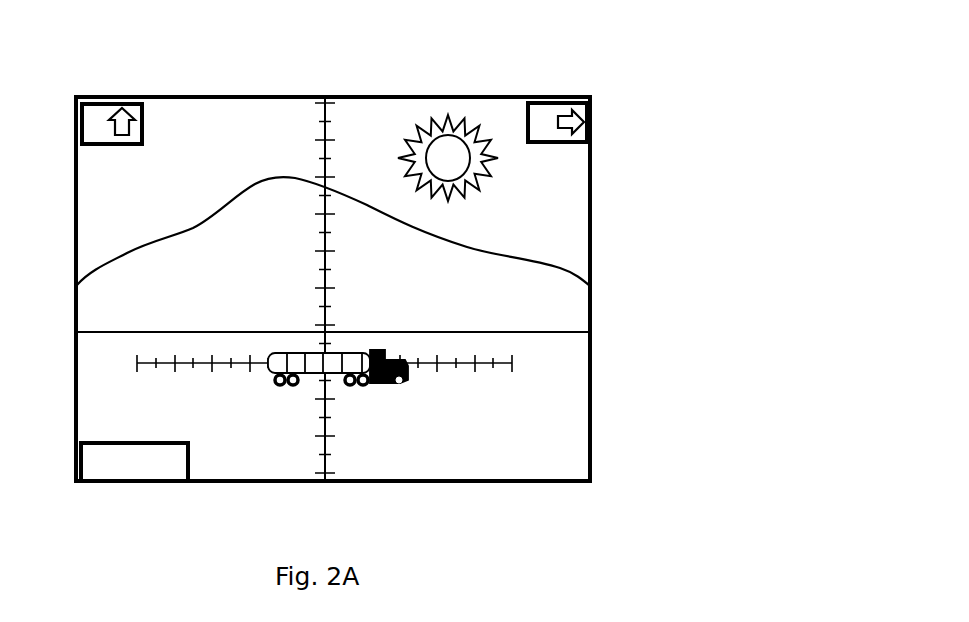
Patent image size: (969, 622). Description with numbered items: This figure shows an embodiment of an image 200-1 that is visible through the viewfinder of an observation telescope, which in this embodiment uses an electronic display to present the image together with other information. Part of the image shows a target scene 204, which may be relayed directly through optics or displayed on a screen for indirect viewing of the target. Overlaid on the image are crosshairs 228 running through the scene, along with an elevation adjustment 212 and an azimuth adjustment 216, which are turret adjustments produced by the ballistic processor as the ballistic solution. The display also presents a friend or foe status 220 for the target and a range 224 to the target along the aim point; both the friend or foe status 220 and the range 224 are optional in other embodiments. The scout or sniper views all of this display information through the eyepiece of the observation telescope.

The image 200-1 is at (588, 72).
The target scene 204 is at (240, 97).
The elevation adjustment 212 is at (102, 103).
The azimuth adjustment 216 is at (552, 101).
The friend or foe status 220 is at (150, 483).
The range 224 is at (548, 481).
The crosshairs 228 is at (325, 97).